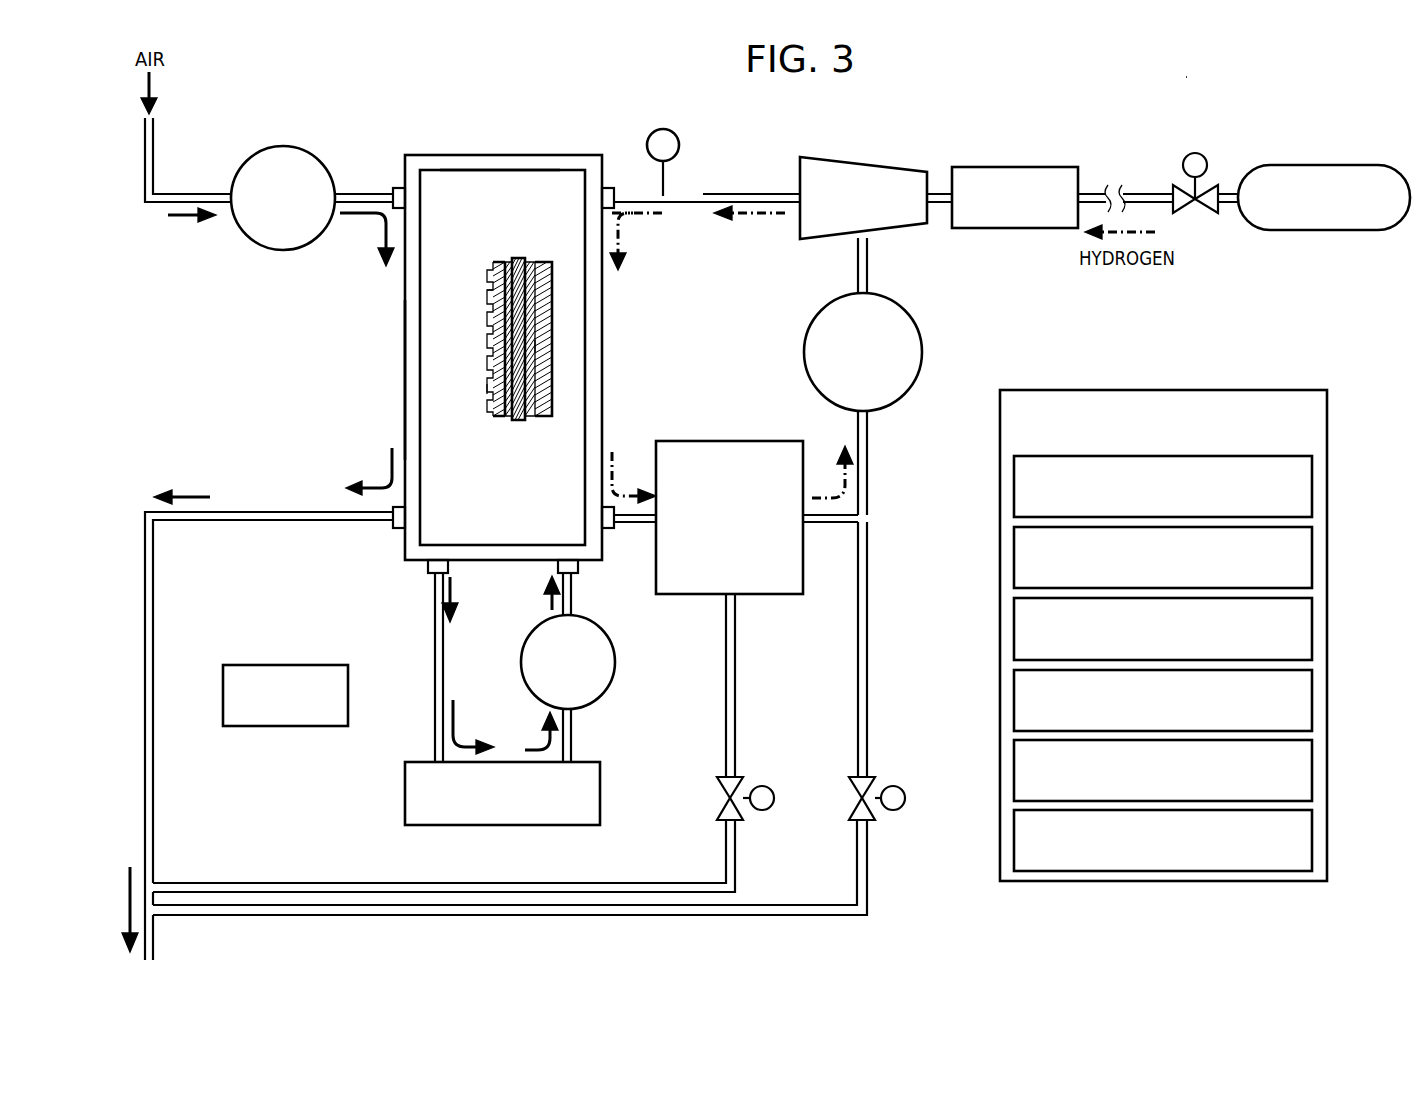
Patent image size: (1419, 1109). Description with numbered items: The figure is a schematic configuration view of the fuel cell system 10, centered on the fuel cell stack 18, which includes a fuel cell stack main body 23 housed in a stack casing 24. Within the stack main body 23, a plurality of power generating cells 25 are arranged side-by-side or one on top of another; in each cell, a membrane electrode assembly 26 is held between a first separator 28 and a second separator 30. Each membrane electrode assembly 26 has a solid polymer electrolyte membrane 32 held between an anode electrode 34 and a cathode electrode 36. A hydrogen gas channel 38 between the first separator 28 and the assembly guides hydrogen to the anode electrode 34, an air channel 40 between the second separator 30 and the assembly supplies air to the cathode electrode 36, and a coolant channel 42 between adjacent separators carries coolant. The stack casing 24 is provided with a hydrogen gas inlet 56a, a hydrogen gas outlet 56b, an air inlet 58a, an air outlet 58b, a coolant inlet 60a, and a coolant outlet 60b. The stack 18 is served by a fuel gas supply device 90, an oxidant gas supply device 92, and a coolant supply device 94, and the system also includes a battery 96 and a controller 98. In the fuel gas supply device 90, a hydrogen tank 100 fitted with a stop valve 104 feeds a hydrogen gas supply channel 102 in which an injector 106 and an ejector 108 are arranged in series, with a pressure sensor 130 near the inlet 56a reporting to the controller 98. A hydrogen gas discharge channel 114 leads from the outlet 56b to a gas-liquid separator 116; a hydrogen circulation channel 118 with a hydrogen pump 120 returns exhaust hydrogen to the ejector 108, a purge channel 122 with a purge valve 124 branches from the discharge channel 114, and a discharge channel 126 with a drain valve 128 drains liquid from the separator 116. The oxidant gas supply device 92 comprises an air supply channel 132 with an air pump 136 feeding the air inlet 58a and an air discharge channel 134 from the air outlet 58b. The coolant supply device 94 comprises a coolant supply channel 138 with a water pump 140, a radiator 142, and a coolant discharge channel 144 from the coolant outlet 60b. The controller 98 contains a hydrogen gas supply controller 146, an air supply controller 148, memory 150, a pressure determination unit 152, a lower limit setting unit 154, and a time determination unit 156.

The fuel cell system 10 is at (1174, 76).
The fuel cell stack 18 is at (528, 134).
The fuel cell stack main body 23 is at (418, 358).
The stack casing 24 is at (405, 380).
The power generating cells 25 is at (482, 158).
The membrane electrode assemblies 26 is at (466, 216).
The first separators 28 is at (552, 297).
The second separators 30 is at (495, 276).
The solid polymer electrolyte membrane 32 is at (519, 257).
The anode electrode 34 is at (532, 262).
The cathode electrode 36 is at (507, 262).
The hydrogen gas channel 38 is at (540, 346).
The air channel 40 is at (495, 292).
The coolant channel 42 is at (487, 388).
The hydrogen gas inlet 56a is at (608, 186).
The hydrogen gas outlet 56b is at (612, 530).
The air inlet 58a is at (397, 186).
The air outlet 58b is at (400, 530).
The coolant inlet 60a is at (557, 566).
The coolant outlet 60b is at (428, 576).
The fuel gas supply device 90 is at (960, 104).
The oxidant gas supply device 92 is at (230, 116).
The coolant supply device 94 is at (390, 822).
The battery 96 is at (274, 665).
The controller 98 is at (1180, 390).
The hydrogen tank 100 is at (1322, 165).
The hydrogen gas supply channel 102 is at (1135, 192).
The stop valve 104 is at (1205, 153).
The injector 106 is at (1013, 166).
The ejector 108 is at (859, 165).
The hydrogen gas discharge channel 114 is at (831, 524).
The gas-liquid separator 116 is at (740, 440).
The hydrogen circulation channel 118 is at (870, 447).
The hydrogen pump 120 is at (920, 335).
The purge channel 122 is at (870, 553).
The purge valve 124 is at (897, 786).
The discharge channel 126 is at (216, 885).
The drain valve 128 is at (764, 786).
The pressure sensor 130 is at (663, 128).
The air supply channel 132 is at (192, 192).
The air discharge channel 134 is at (312, 525).
The air pump 136 is at (301, 150).
The coolant supply channel 138 is at (575, 597).
The water pump 140 is at (610, 680).
The radiator 142 is at (405, 773).
The coolant discharge channel 144 is at (433, 676).
The hydrogen gas supply controller 146 is at (1312, 472).
The air supply controller 148 is at (1312, 546).
The memory 150 is at (1312, 613).
The pressure determination unit 152 is at (1312, 686).
The lower limit setting unit 154 is at (1312, 753).
The time determination unit 156 is at (1312, 826).